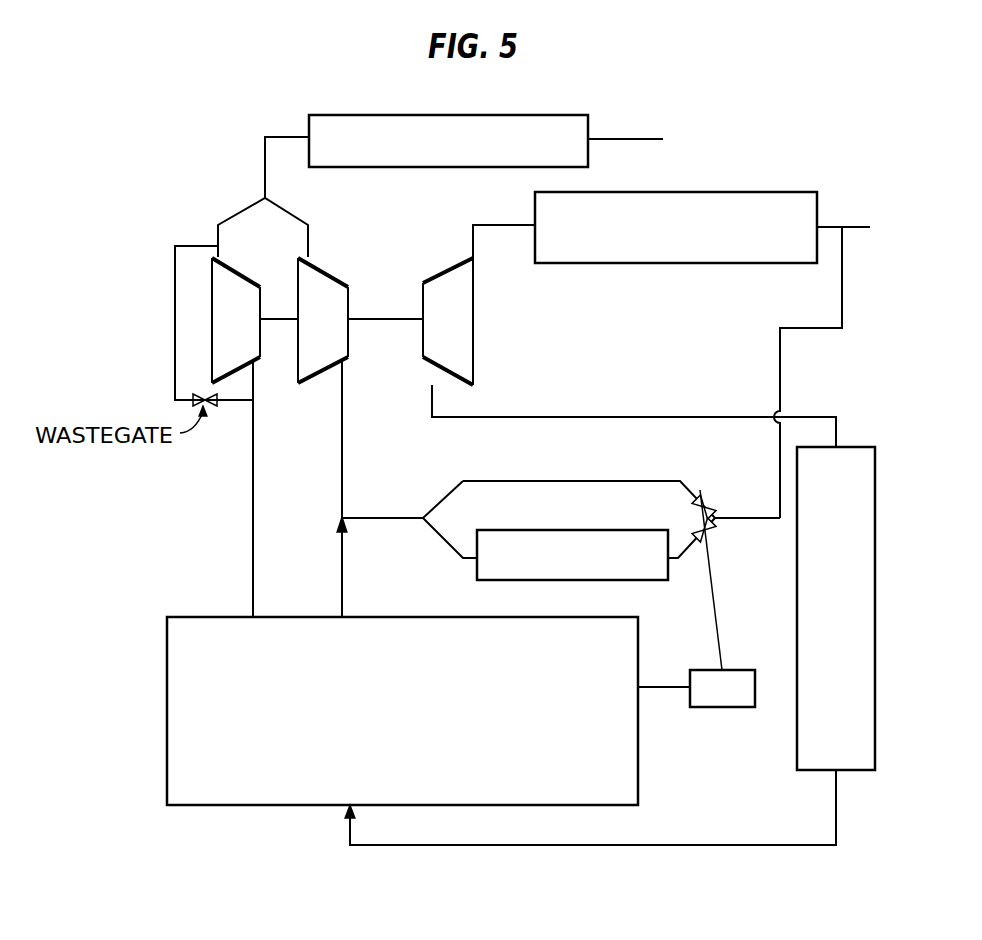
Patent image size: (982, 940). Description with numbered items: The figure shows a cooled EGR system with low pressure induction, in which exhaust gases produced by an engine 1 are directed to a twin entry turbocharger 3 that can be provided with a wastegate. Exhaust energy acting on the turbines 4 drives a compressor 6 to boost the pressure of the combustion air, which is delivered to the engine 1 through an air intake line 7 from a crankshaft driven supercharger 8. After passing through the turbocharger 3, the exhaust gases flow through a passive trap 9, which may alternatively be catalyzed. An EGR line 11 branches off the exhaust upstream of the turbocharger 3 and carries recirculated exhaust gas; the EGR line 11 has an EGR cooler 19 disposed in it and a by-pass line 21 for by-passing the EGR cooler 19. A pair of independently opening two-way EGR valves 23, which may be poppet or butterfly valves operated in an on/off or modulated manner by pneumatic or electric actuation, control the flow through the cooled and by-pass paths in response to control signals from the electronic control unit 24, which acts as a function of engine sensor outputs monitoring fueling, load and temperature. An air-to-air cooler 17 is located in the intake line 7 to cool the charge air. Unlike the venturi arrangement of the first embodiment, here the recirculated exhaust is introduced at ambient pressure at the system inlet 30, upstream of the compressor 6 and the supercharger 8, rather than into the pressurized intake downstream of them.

The engine 1 is at (425, 617).
The twin entry turbocharger 3 is at (282, 388).
The turbines 4 is at (298, 287).
The compressor 6 is at (473, 318).
The air intake line 7 is at (638, 845).
The crankshaft driven supercharger 8 is at (772, 192).
The passive trap 9 is at (544, 115).
The EGR line 11 is at (391, 518).
The air-to-air cooler 17 is at (862, 447).
The EGR cooler 19 is at (592, 530).
The by-pass line 21 is at (465, 477).
The two-way EGR valves 23 is at (710, 523).
The electronic control unit 24 is at (710, 670).
The system inlet 30 is at (857, 227).